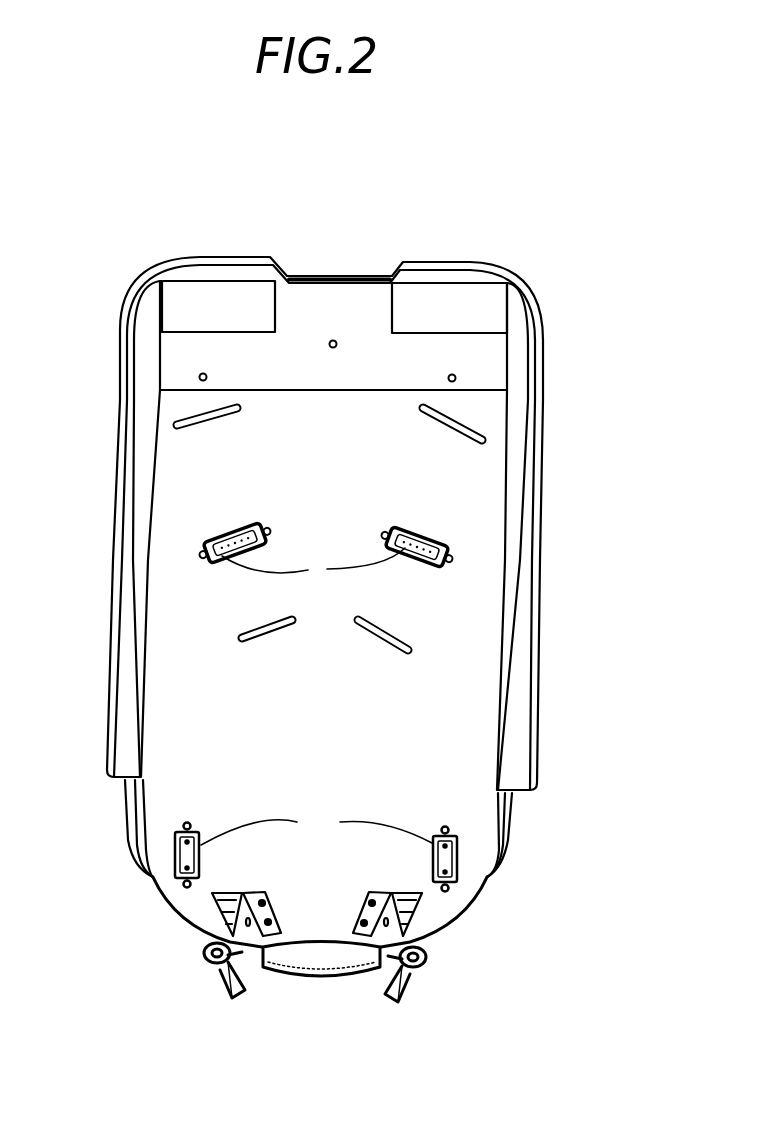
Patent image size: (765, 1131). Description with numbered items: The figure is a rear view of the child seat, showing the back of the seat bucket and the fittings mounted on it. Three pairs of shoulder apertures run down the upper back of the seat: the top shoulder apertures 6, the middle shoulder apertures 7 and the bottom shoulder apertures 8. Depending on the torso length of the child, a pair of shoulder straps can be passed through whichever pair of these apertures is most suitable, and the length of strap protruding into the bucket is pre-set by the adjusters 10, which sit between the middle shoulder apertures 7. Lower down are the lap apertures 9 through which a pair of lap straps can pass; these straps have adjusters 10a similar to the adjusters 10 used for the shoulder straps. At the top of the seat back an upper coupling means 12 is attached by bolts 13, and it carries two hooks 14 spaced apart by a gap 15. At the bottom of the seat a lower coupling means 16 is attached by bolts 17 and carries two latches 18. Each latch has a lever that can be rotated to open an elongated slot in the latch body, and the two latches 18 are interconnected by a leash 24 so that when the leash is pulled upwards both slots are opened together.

The top shoulder apertures 6 is at (218, 412).
The middle shoulder apertures 7 is at (313, 565).
The bottom shoulder apertures 8 is at (262, 630).
The lap apertures 9 is at (432, 857).
The adjusters 10 is at (407, 530).
The adjusters 10a is at (316, 827).
The upper coupling means 12 is at (173, 335).
The bolts 13 is at (199, 377).
The hooks 14 is at (188, 288).
The gap 15 is at (382, 261).
The lower coupling means 16 is at (300, 988).
The bolts 17 is at (402, 893).
The latches 18 is at (228, 993).
The leash 24 is at (342, 982).